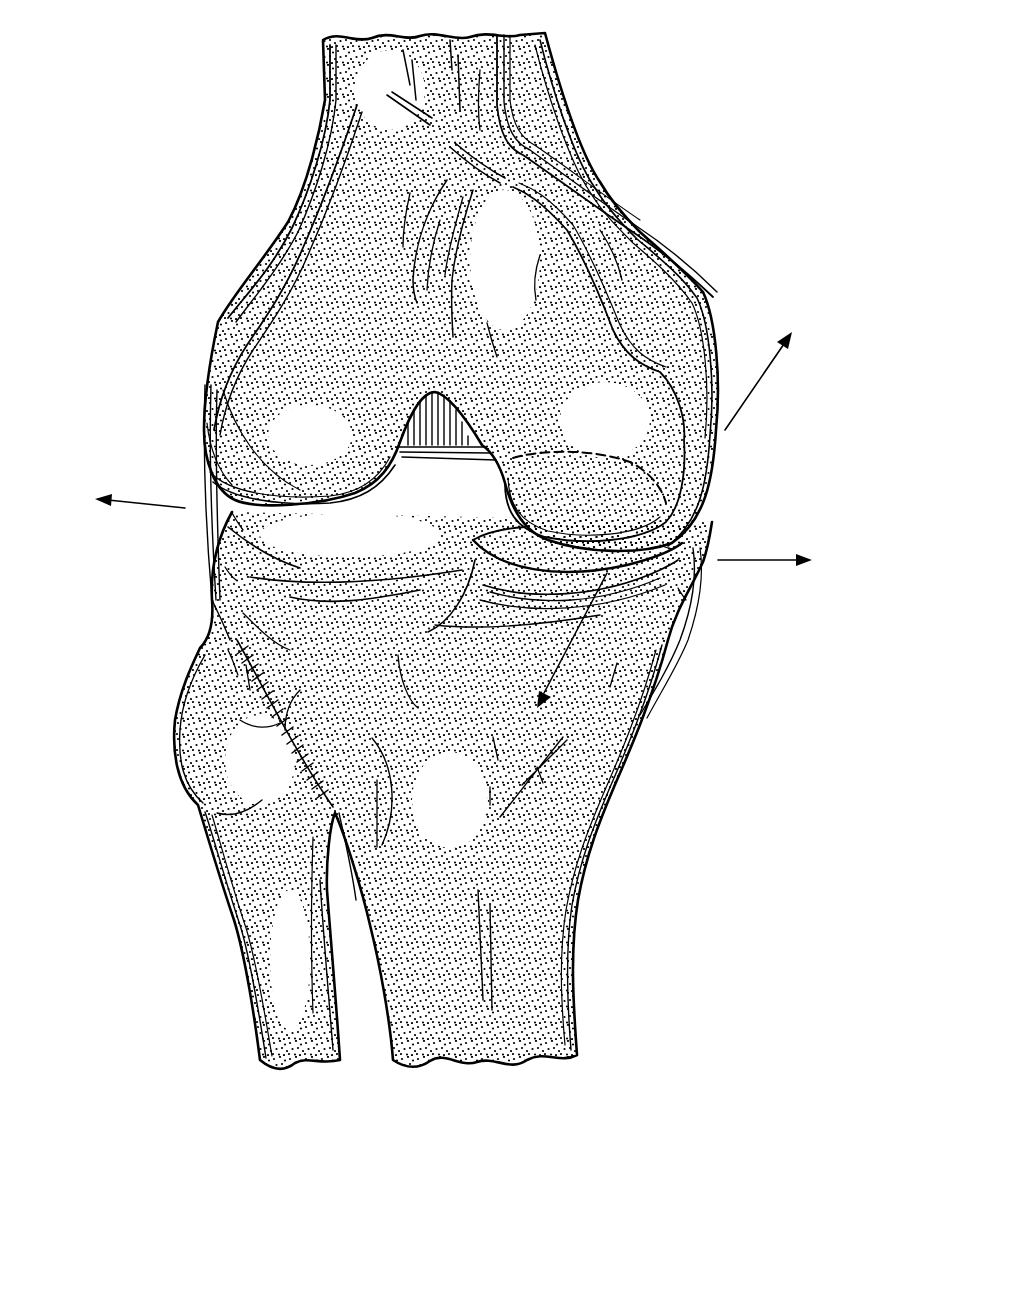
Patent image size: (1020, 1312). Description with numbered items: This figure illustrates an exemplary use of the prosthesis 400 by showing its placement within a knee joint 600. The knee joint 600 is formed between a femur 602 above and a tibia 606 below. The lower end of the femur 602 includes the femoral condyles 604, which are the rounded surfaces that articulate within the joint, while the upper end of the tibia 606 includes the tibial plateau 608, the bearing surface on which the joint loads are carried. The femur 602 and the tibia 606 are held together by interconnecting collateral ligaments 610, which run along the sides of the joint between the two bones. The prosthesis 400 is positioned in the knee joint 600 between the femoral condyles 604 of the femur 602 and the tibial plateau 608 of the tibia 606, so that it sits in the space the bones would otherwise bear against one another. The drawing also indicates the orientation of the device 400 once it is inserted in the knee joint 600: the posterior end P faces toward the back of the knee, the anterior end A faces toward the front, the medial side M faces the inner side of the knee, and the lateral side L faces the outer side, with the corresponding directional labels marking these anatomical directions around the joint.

The knee joint 600 is at (170, 406).
The femur 602 is at (538, 117).
The femoral condyles 604 is at (232, 513).
The tibia 606 is at (590, 765).
The tibial plateau 608 is at (686, 600).
The collateral ligaments 610 is at (258, 500).
The prosthesis 400 is at (433, 624).
The lateral side L is at (505, 500).
The medial side M is at (665, 548).
The posterior end P is at (700, 448).
The anterior end A is at (640, 615).